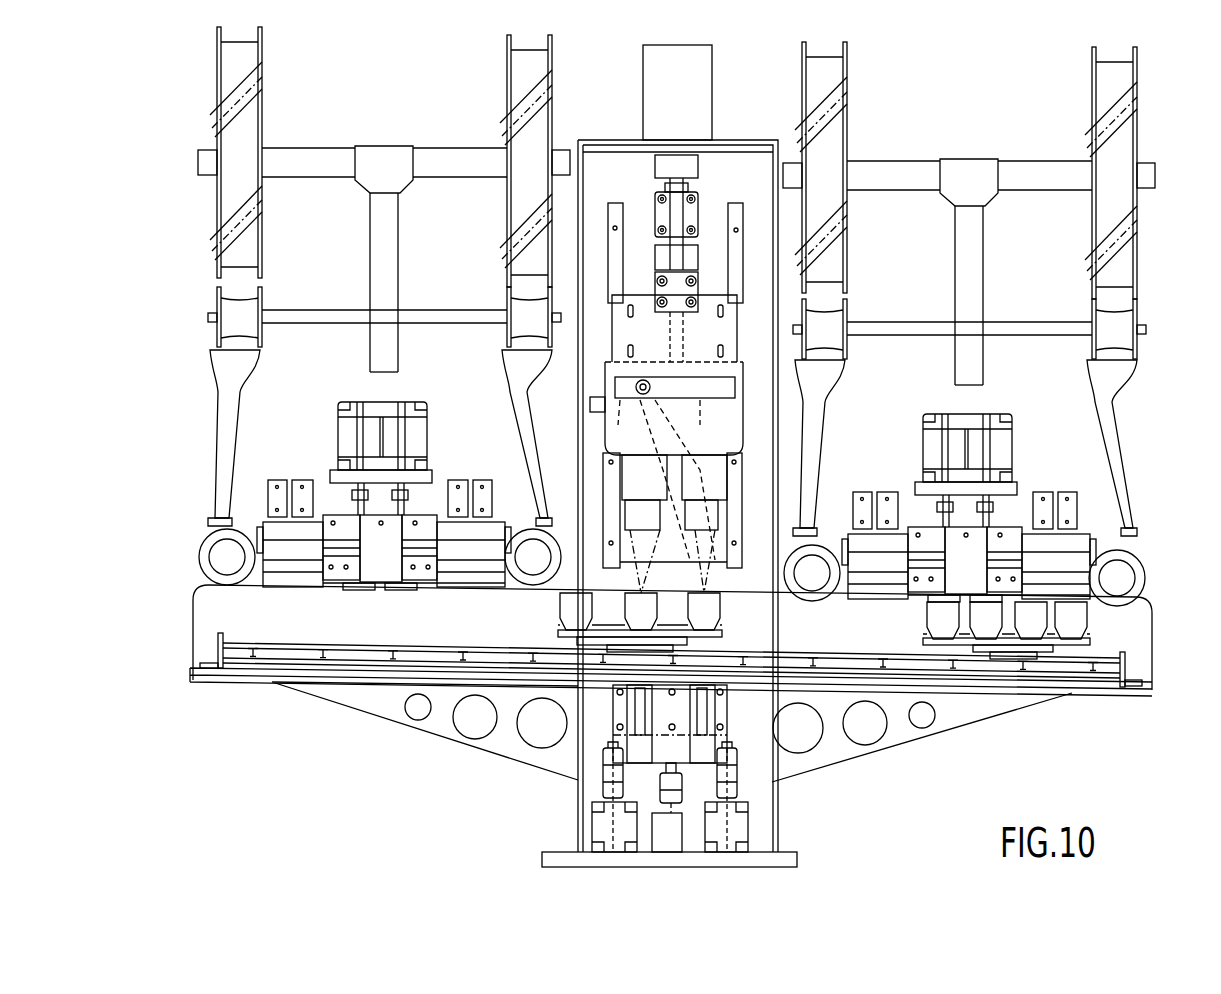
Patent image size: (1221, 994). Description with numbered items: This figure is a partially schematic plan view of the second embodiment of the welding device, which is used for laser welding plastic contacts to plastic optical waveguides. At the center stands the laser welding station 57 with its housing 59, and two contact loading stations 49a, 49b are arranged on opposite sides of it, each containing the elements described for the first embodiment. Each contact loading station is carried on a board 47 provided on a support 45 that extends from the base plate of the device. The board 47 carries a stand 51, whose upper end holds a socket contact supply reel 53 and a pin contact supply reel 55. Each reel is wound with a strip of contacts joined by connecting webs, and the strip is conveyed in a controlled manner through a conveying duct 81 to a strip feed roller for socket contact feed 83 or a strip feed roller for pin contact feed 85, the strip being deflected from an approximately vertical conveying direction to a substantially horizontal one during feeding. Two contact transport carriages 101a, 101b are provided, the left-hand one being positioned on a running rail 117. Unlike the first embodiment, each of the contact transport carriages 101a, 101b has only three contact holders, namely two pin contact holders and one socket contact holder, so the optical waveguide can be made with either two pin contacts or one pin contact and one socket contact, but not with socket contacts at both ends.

The socket contact supply reel 53 is at (240, 50).
The pin contact supply reel 55 is at (540, 57).
The stand 51 is at (385, 243).
The laser welding station 57 is at (717, 130).
The housing 59 is at (744, 165).
The conveying duct 81 is at (230, 387).
The strip feed roller for socket contact feed 83 is at (205, 557).
The strip feed roller for pin contact feed 85 is at (538, 588).
The contact loading station 49a is at (383, 599).
The contact loading station 49b is at (914, 603).
The contact transport carriage 101a is at (730, 633).
The contact transport carriage 101b is at (1097, 635).
The running rail 117 is at (295, 643).
The board 47 is at (250, 684).
The support 45 is at (381, 706).